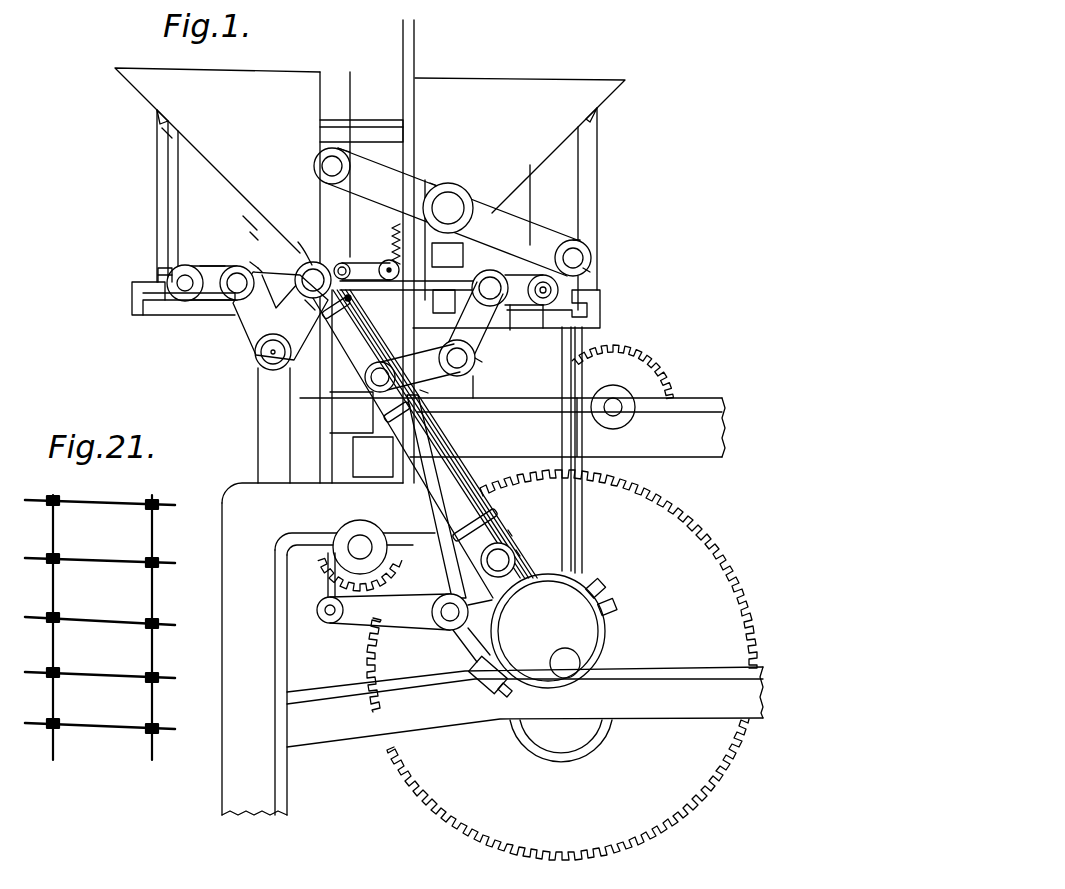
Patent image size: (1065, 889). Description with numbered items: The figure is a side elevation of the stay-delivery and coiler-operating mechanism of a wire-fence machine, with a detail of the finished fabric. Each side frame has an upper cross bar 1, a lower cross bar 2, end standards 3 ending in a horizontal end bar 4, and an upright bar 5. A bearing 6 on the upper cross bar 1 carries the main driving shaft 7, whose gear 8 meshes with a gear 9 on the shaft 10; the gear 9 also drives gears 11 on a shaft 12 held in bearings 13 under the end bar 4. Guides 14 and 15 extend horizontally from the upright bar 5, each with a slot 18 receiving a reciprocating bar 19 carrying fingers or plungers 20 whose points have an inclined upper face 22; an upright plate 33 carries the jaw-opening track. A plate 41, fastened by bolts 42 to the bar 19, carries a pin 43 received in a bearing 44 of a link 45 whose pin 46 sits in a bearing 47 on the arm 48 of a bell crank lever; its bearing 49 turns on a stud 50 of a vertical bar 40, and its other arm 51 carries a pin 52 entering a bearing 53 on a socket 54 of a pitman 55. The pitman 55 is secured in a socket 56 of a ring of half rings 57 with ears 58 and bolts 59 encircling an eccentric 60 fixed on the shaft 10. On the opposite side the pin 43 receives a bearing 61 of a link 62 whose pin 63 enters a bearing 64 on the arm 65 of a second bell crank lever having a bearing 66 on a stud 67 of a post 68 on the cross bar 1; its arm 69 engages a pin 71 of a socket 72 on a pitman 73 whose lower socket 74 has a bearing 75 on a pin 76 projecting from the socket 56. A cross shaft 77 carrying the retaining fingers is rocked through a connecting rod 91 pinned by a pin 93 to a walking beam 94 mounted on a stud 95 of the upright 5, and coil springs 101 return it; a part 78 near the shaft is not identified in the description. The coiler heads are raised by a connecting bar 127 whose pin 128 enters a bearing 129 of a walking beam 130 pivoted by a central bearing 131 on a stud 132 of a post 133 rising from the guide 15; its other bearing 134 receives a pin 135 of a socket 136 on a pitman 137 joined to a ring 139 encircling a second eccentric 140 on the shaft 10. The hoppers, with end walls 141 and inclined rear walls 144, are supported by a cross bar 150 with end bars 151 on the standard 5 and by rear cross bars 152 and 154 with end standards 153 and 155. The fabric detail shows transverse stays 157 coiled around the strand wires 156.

In FIG. 1, the upper cross bar 1 is at (567, 427).
In FIG. 1, the lower cross bar 2 is at (525, 707).
In FIG. 1, the end uprights or standards 3 is at (254, 659).
In FIG. 1, the horizontal end bar 4 is at (328, 519).
In FIG. 1, the upright or vertical bar 5 is at (403, 105).
In FIG. 1, the journal box or bearing 6 is at (615, 405).
In FIG. 1, the main driving shaft 7 is at (618, 412).
In FIG. 1, the gear 8 is at (660, 392).
In FIG. 1, the gear 9 is at (562, 665).
In FIG. 1, the shaft 10 is at (567, 658).
In FIG. 1, the gear 11 is at (360, 574).
In FIG. 1, the shaft 12 is at (365, 540).
In FIG. 1, the journal box or bearing 13 is at (356, 522).
In FIG. 1, the guide 14 is at (135, 305).
In FIG. 1, the guide 15 is at (600, 300).
In FIG. 1, the longitudinal slot 18 is at (150, 318).
In FIG. 1, the bar 19 is at (165, 302).
In FIG. 1, the finger or plunger 20 is at (455, 280).
In FIG. 1, the inclined upper face 22 is at (281, 261).
In FIG. 1, the upright plate or support 33 is at (347, 296).
In FIG. 1, the vertical bar 40 is at (291, 433).
In FIG. 1, the plate 41 is at (158, 278).
In FIG. 1, the bolt 42 is at (160, 270).
In FIG. 1, the pin or pivot 43 is at (543, 287).
In FIG. 1, the bearing 44 is at (185, 268).
In FIG. 1, the link 45 is at (205, 268).
In FIG. 1, the pin or pivot 46 is at (236, 288).
In FIG. 1, the bearing 47 is at (254, 266).
In FIG. 1, the arm or member of bell crank lever 48 is at (280, 316).
In FIG. 1, the bearing 49 is at (258, 356).
In FIG. 1, the pin or stud 50 is at (276, 352).
In FIG. 1, the arm or member of bell crank lever 51 is at (300, 313).
In FIG. 1, the pin or stud 52 is at (296, 241).
In FIG. 1, the bearing 53 is at (316, 276).
In FIG. 1, the socket 54 is at (366, 355).
In FIG. 1, the pitman or rod 55 is at (345, 333).
In FIG. 1, the socket 56 is at (511, 535).
In FIG. 1, the half ring or section 57 is at (540, 575).
In FIG. 1, the ear 58 is at (603, 592).
In FIG. 1, the bolt 59 is at (616, 607).
In FIG. 1, the eccentric 60 is at (548, 631).
In FIG. 1, the bearing 61 is at (543, 306).
In FIG. 1, the link 62 is at (531, 288).
In FIG. 1, the pin or stud 63 is at (490, 288).
In FIG. 1, the bearing 64 is at (517, 325).
In FIG. 1, the arm or member of bell crank lever 65 is at (473, 323).
In FIG. 1, the bearing 66 is at (473, 365).
In FIG. 1, the pin or stud 67 is at (468, 355).
In FIG. 1, the post or upright 68 is at (474, 392).
In FIG. 1, the arm or member of bell crank lever 69 is at (418, 367).
In FIG. 1, the pin or stud 71 is at (380, 377).
In FIG. 1, the socket 72 is at (425, 391).
In FIG. 1, the pitman or rod 73 is at (438, 412).
In FIG. 1, the socket 74 is at (492, 512).
In FIG. 1, the bearing 75 is at (518, 553).
In FIG. 1, the pin 76 is at (498, 560).
In FIG. 1, the cross shaft or rod 77 is at (386, 260).
In FIG. 1, the rack 78 is at (398, 235).
In FIG. 1, the connecting rod or pitman 91 is at (352, 453).
In FIG. 1, the pin or pivot 93 is at (332, 615).
In FIG. 1, the walking beam or lever 94 is at (450, 622).
In FIG. 1, the pin or stud 95 is at (470, 610).
In FIG. 1, the coil spring 101 is at (362, 261).
In FIG. 1, the connecting bar 127 is at (335, 277).
In FIG. 1, the stud or pin 128 is at (322, 168).
In FIG. 1, the bearing 129 is at (345, 155).
In FIG. 1, the lever or walking beam 130 is at (453, 212).
In FIG. 1, the bearing 131 is at (455, 190).
In FIG. 1, the pin or stud 132 is at (448, 208).
In FIG. 1, the post or standard 133 is at (447, 254).
In FIG. 1, the bearing 134 is at (578, 242).
In FIG. 1, the pin or stud 135 is at (592, 256).
In FIG. 1, the socket 136 is at (590, 270).
In FIG. 1, the connecting rod or pitman 137 is at (562, 361).
In FIG. 1, the ring 139 is at (612, 735).
In FIG. 1, the eccentric 140 is at (590, 725).
In FIG. 1, the end wall 141 is at (370, 160).
In FIG. 1, the inclined rear wall 144 is at (372, 206).
In FIG. 1, the cross bar 150 is at (320, 128).
In FIG. 1, the bar 151 is at (352, 124).
In FIG. 1, the cross bar 152 is at (157, 112).
In FIG. 1, the end standard 153 is at (160, 190).
In FIG. 1, the cross bar 154 is at (243, 218).
In FIG. 1, the end standard 155 is at (255, 236).
In FIG. 21, the strand wire 156 is at (114, 508).
In FIG. 21, the transverse stay 157 is at (153, 550).